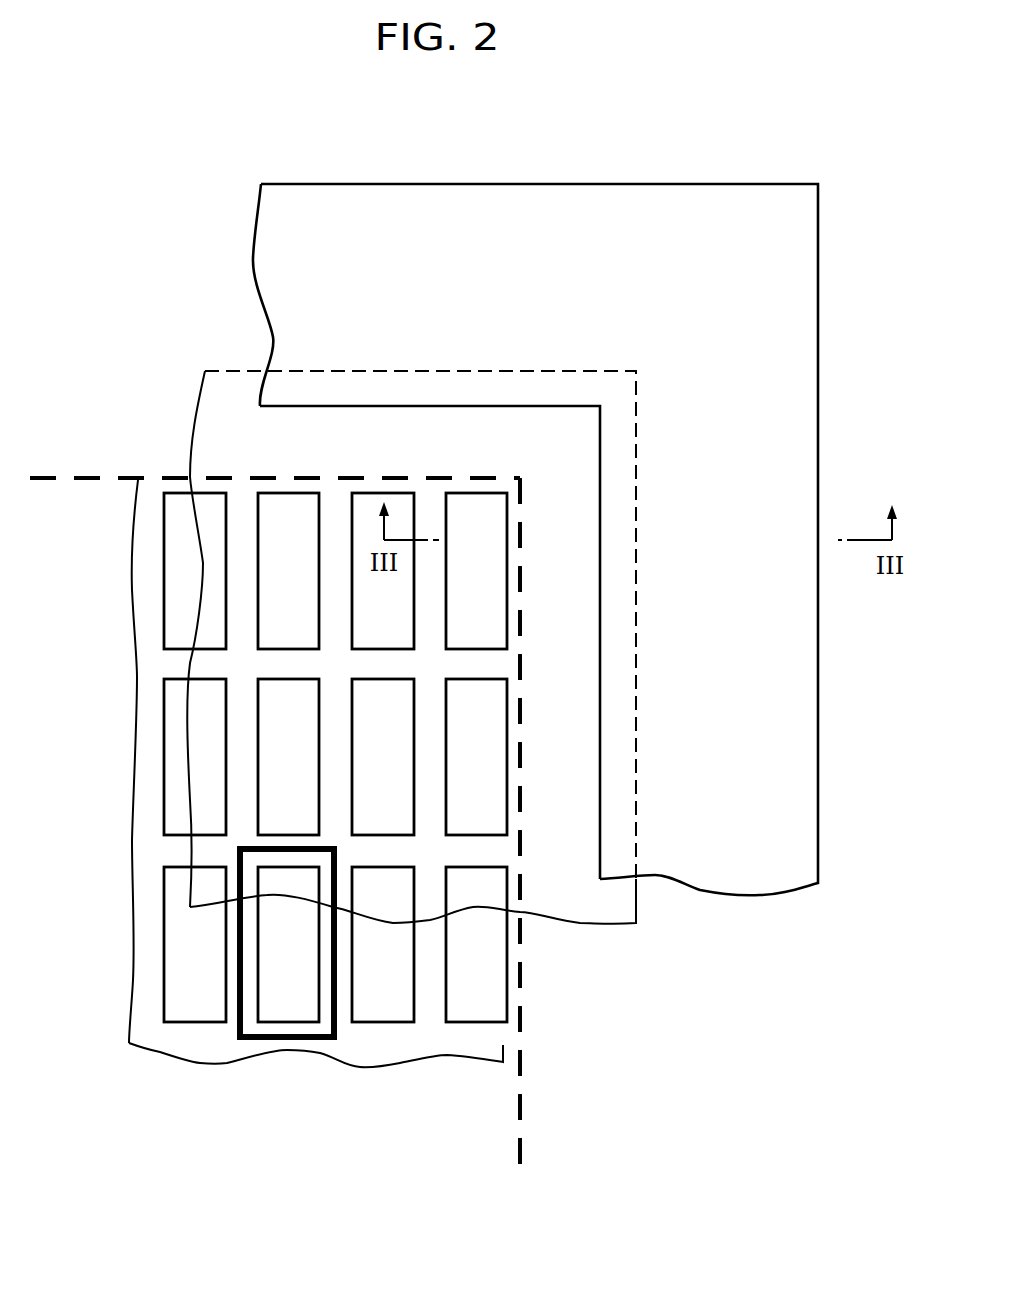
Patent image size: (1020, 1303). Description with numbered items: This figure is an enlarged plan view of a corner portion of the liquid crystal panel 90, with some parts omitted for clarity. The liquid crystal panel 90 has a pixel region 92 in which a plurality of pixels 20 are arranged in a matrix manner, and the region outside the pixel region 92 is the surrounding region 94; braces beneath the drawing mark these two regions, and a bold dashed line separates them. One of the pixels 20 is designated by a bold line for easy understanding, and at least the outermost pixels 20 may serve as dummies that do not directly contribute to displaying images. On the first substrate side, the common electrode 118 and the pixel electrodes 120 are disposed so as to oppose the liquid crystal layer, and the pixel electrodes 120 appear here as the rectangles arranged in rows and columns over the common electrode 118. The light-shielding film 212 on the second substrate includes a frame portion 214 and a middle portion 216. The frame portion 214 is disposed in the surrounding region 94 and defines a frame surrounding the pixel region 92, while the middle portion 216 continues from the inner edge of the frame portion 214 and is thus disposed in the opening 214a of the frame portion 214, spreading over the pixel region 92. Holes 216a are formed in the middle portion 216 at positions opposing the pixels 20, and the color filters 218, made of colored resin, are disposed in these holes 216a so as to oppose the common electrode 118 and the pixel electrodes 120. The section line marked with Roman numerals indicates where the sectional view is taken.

The liquid crystal panel 90 is at (204, 160).
The pixel region 92 is at (513, 1192).
The surrounding region 94 is at (817, 1192).
The common electrode 118 is at (147, 1022).
The pixel electrodes 120 is at (173, 533).
The pixel 20 is at (237, 1030).
The light-shielding film 212 is at (136, 233).
The frame portion 214 is at (274, 258).
The opening 214a is at (598, 842).
The middle portion 216 is at (238, 383).
The holes 216a is at (475, 812).
The color filters 218 is at (272, 578).